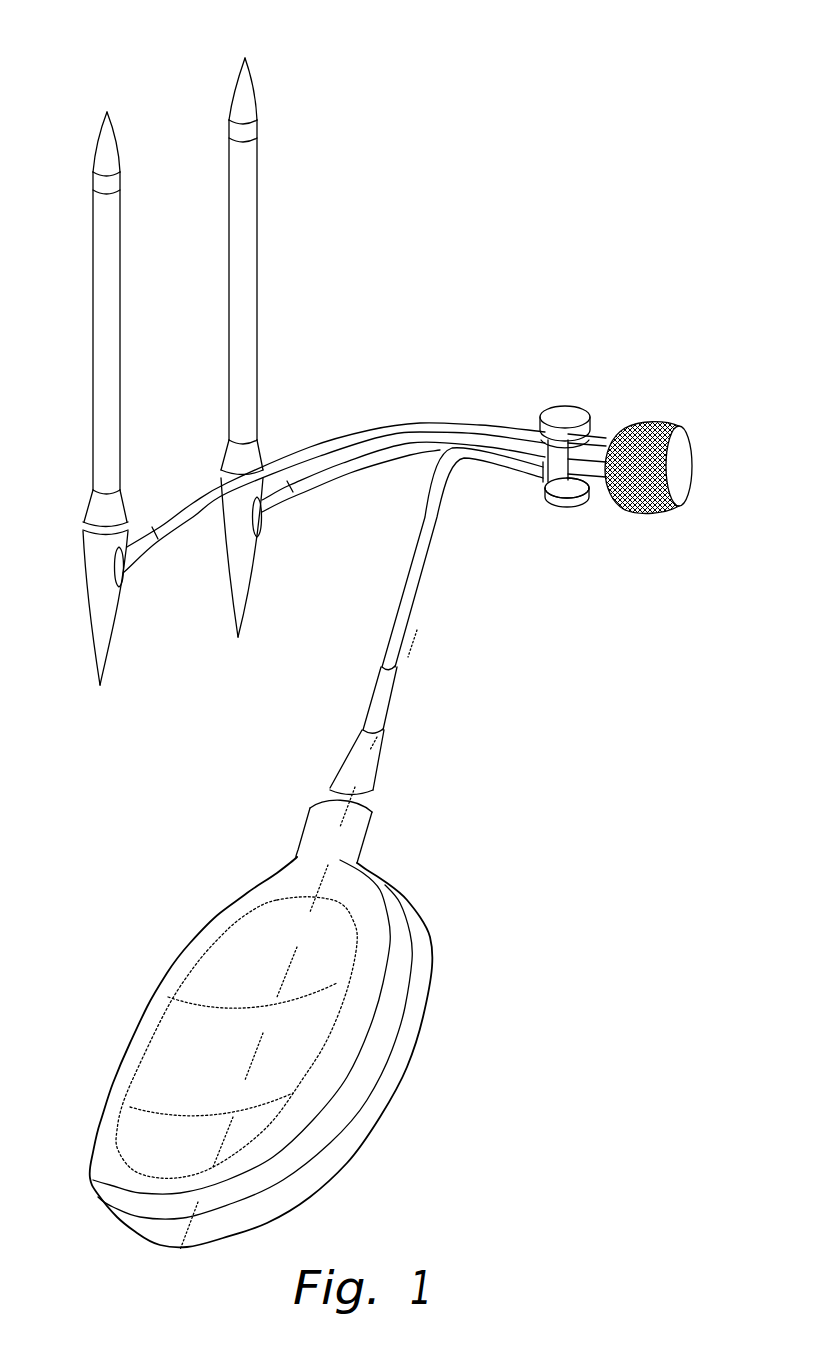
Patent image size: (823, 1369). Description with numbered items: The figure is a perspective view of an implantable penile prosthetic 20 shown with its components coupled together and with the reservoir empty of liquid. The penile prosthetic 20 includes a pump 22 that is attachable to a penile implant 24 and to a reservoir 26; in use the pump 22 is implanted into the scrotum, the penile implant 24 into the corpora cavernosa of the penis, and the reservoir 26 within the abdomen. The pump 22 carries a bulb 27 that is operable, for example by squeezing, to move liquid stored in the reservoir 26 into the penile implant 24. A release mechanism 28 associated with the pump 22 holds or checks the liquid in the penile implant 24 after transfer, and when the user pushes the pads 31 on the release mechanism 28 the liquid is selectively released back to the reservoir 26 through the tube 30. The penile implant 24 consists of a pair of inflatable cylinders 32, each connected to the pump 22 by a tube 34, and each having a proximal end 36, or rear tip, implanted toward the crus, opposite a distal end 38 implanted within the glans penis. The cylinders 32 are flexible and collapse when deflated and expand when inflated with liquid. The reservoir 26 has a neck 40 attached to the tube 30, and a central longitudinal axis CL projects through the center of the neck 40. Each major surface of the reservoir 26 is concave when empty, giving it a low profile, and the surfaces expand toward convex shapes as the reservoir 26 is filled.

The implantable penile prosthetic 20 is at (418, 220).
The pump 22 is at (602, 393).
The penile implant 24 is at (262, 36).
The reservoir 26 is at (475, 925).
The bulb 27 is at (690, 462).
The release mechanism 28 is at (543, 470).
The tube 30 is at (410, 575).
The pads 31 is at (562, 406).
The inflatable cylinders 32 is at (93, 305).
The tube 34 is at (425, 422).
The proximal end 36 is at (100, 687).
The distal end 38 is at (107, 112).
The neck 40 is at (358, 836).
The central longitudinal axis CL is at (374, 790).